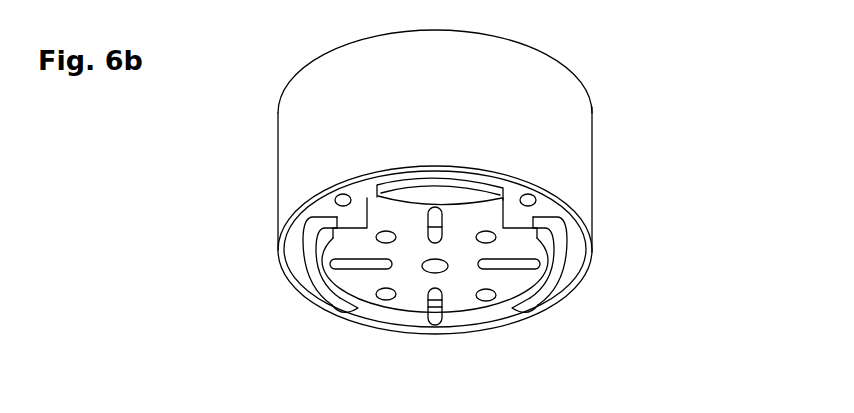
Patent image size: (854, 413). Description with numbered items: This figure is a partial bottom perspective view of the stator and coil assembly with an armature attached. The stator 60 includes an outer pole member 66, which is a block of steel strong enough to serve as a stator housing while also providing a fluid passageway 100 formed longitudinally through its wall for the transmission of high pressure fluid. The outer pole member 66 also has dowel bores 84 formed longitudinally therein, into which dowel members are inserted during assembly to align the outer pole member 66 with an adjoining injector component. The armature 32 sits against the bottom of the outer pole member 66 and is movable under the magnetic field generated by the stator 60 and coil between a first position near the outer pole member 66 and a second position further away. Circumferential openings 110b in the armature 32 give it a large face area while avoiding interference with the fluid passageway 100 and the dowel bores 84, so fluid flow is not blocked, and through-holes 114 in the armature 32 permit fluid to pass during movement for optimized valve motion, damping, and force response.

The armature 32 is at (553, 278).
The stator 60 is at (370, 208).
The outer pole member 66 is at (445, 170).
The dowel bore 84 is at (537, 220).
The fluid passageway 100 is at (365, 200).
The circumferential opening 110b is at (334, 200).
The through-hole 114 is at (496, 238).